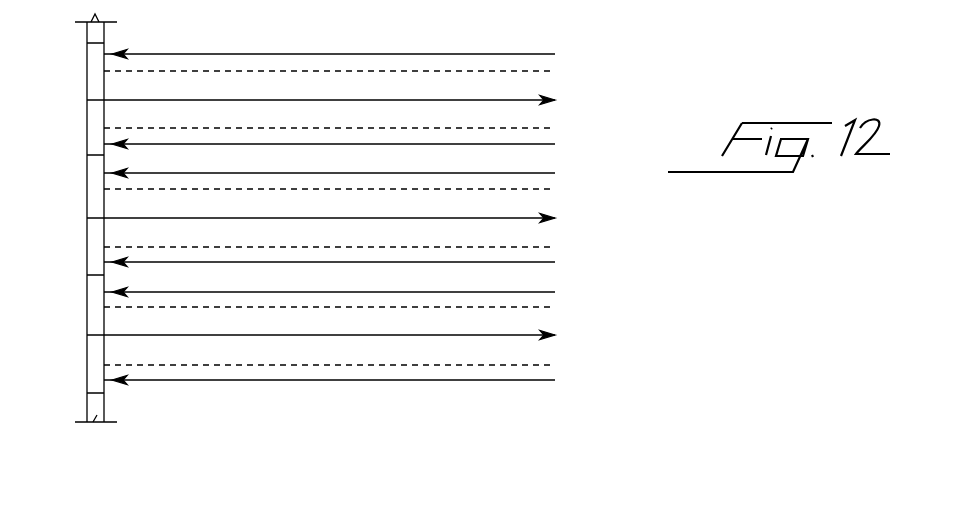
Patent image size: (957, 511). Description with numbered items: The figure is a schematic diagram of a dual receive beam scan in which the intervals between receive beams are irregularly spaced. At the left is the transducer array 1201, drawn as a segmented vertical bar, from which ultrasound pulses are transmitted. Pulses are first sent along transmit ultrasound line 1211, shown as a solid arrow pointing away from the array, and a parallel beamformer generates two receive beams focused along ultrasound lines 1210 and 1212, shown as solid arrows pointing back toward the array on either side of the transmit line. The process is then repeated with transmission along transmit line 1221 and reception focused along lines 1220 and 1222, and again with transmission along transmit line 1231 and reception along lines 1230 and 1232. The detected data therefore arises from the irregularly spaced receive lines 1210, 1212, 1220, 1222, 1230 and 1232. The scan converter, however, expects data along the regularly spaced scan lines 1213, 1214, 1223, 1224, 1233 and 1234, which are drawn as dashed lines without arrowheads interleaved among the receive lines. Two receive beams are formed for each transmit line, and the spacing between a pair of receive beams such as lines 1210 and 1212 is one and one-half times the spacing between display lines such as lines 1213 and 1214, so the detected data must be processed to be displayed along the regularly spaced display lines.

The transducer array 1201 is at (76, 360).
The receive ultrasound line 1210 is at (363, 378).
The transmit ultrasound line 1211 is at (363, 333).
The receive ultrasound line 1212 is at (363, 290).
The regularly spaced scan line 1213 is at (363, 363).
The regularly spaced scan line 1214 is at (363, 305).
The receive ultrasound line 1220 is at (363, 260).
The transmit ultrasound line 1221 is at (363, 216).
The receive ultrasound line 1222 is at (363, 171).
The regularly spaced scan line 1223 is at (363, 245).
The regularly spaced scan line 1224 is at (363, 187).
The receive ultrasound line 1230 is at (363, 142).
The transmit ultrasound line 1231 is at (363, 98).
The receive ultrasound line 1232 is at (363, 52).
The regularly spaced scan line 1233 is at (363, 126).
The regularly spaced scan line 1234 is at (363, 69).